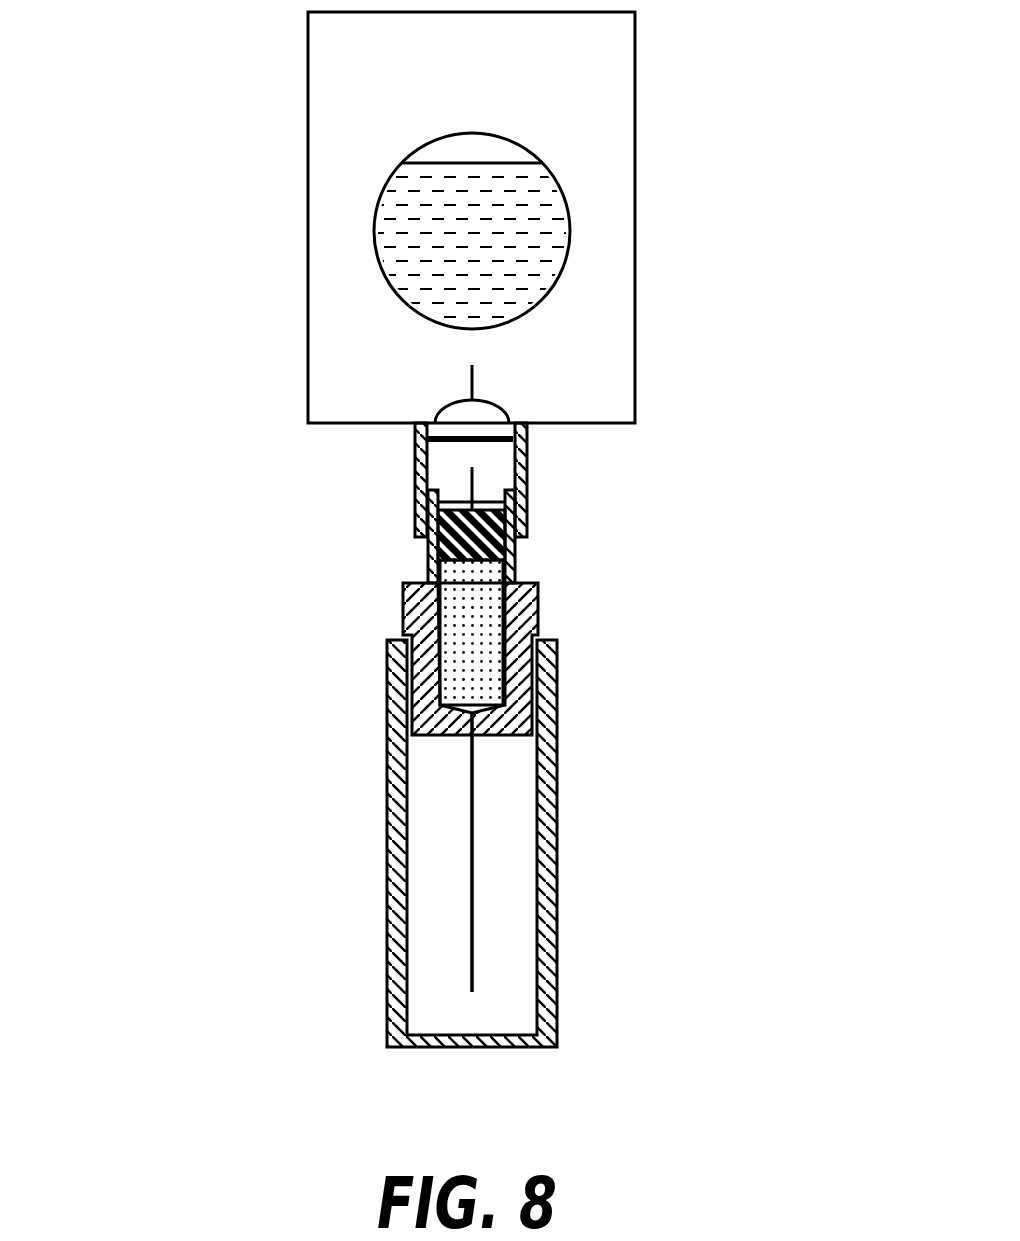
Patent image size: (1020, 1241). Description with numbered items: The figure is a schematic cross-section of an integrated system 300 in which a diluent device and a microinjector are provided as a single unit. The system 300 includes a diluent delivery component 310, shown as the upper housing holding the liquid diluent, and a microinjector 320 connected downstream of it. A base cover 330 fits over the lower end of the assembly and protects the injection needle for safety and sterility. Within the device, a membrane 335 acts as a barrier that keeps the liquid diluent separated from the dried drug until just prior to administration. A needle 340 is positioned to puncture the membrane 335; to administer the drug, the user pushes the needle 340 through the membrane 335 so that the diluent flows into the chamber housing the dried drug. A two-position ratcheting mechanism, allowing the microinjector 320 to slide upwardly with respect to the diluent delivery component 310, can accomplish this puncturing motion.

The integrated system 300 is at (235, 622).
The diluent delivery component 310 is at (659, 205).
The microinjector 320 is at (559, 596).
The base cover 330 is at (576, 772).
The membrane 335 is at (482, 437).
The needle 340 is at (478, 483).